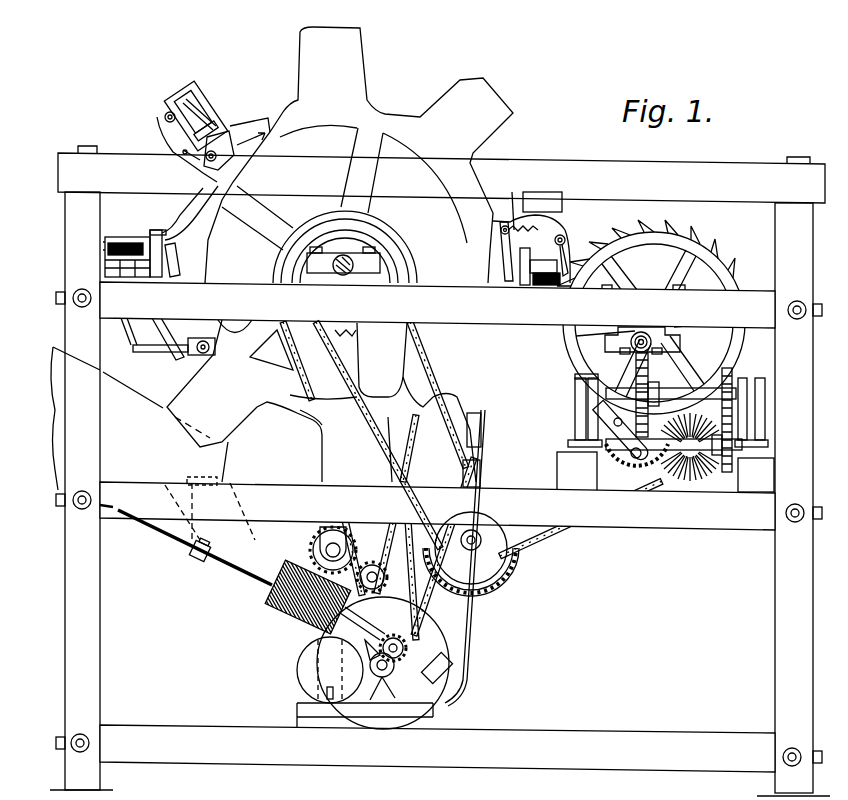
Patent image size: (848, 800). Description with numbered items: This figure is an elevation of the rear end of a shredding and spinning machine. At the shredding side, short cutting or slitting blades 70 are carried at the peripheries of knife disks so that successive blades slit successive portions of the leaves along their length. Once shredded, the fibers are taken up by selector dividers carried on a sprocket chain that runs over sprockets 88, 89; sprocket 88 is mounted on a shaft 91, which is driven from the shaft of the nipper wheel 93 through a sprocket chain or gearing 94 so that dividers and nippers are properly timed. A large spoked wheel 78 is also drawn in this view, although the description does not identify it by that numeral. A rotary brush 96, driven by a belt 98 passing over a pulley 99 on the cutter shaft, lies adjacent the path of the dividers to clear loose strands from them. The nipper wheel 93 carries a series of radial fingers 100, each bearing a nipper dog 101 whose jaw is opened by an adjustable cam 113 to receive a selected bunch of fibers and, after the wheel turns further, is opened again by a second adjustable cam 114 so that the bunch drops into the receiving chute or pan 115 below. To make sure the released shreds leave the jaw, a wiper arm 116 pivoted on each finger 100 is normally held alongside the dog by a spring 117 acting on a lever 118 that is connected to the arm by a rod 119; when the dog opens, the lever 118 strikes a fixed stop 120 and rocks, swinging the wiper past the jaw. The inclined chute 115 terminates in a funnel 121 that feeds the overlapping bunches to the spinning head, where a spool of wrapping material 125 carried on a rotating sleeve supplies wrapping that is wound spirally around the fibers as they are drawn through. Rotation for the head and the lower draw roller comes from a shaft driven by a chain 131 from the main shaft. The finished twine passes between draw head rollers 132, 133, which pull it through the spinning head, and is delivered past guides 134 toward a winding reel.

The cutting or slitting blades 70 is at (699, 242).
The spoked gear wheel 78 is at (662, 242).
The sprocket 88 is at (483, 560).
The sprocket 89 is at (627, 467).
The shaft 91 is at (465, 555).
The nipper wheel 93 is at (402, 117).
The sprocket chain or other form of gearing 94 is at (320, 416).
The rotary brush 96 is at (680, 477).
The belt 98 is at (725, 370).
The pulley 99 is at (697, 333).
The radial fingers 100 is at (353, 70).
The nipper dog 101 is at (128, 231).
The cam 113 is at (578, 275).
The second adjustable cam 114 is at (163, 240).
The receiving chute or pan 115 is at (163, 533).
The wiper arm 116 is at (170, 112).
The spring 117 is at (190, 157).
The lever 118 is at (213, 150).
The rod 119 is at (195, 130).
The fixed stop 120 is at (168, 354).
The funnel 121 is at (240, 560).
The spool of wrapping material 125 is at (277, 610).
The chain 131 is at (292, 358).
The draw head roller 132 is at (390, 640).
The draw head roller 133 is at (296, 670).
The guides 134 is at (407, 673).